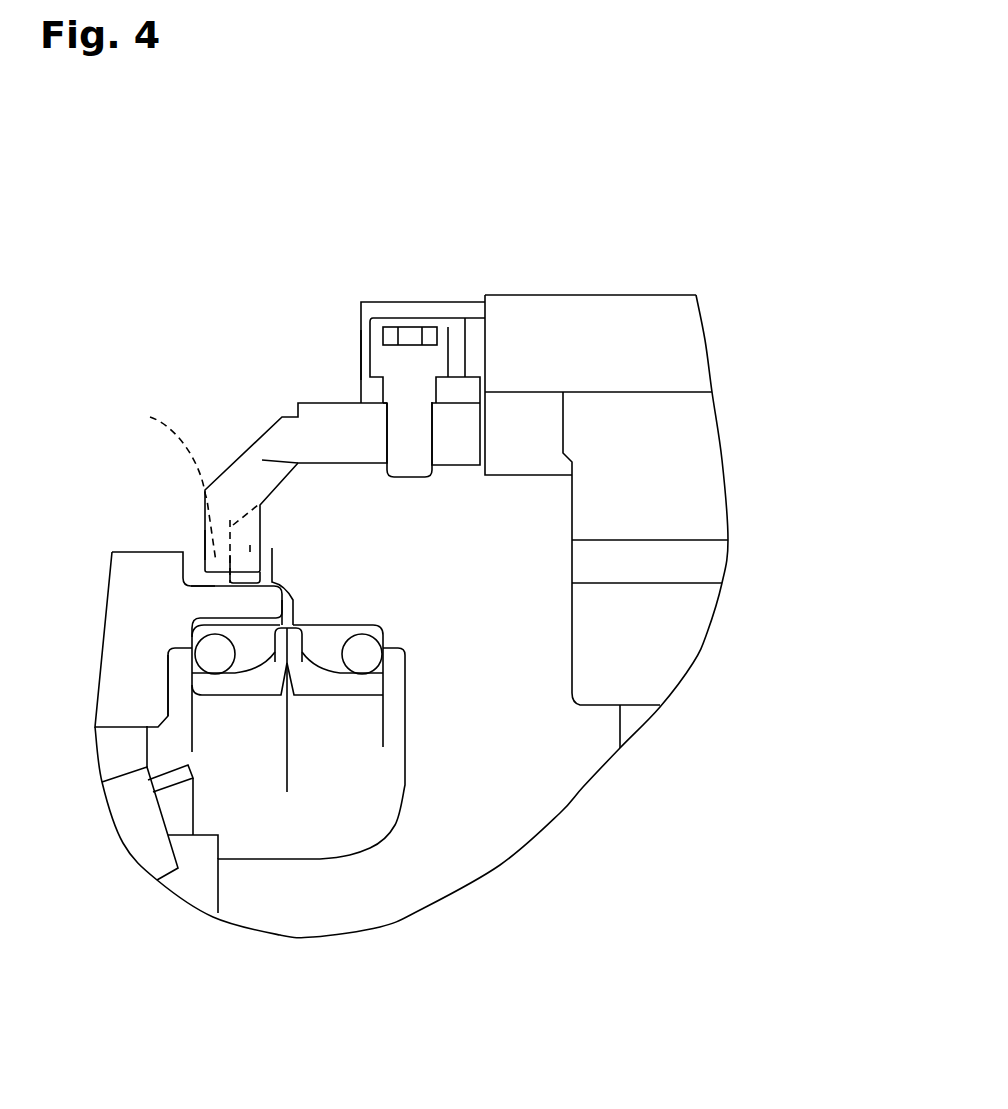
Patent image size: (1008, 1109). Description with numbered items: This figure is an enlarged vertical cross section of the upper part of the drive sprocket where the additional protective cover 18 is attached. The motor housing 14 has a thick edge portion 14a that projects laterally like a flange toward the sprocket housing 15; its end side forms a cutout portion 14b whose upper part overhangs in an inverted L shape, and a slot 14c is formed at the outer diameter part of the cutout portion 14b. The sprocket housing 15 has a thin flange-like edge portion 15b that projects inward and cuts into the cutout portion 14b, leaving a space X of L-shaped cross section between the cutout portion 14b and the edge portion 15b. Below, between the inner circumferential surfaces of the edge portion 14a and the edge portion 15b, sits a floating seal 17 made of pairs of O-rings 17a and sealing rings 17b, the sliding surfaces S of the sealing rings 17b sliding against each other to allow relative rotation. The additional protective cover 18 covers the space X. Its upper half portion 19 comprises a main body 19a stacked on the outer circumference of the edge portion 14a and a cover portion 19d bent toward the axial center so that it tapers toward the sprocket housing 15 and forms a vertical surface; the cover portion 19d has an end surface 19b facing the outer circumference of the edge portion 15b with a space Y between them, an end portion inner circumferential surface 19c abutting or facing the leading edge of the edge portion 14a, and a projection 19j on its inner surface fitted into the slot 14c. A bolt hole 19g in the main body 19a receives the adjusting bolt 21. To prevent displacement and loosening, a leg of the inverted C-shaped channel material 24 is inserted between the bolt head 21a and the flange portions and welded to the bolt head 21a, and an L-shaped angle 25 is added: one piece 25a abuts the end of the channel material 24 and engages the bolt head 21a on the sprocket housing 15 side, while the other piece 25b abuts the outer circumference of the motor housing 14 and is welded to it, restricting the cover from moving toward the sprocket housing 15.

The motor housing 14 is at (545, 752).
The edge portion 14a is at (482, 563).
The cutout portion 14b is at (300, 585).
The slot 14c is at (280, 572).
The sprocket housing 15 is at (142, 585).
The edge portion 15b is at (200, 580).
The floating seal 17 is at (313, 725).
The O-ring 17a is at (213, 653).
The sealing ring 17b is at (243, 683).
The additional protective cover 18 is at (330, 472).
The upper half portion 19 is at (360, 452).
The main body 19a is at (467, 442).
The end surface 19b is at (204, 543).
The end portion inner circumferential surface 19c is at (181, 491).
The cover portion 19d is at (262, 460).
The bolt hole 19g is at (383, 425).
The projection 19j is at (250, 545).
The adjusting bolt 21 is at (417, 423).
The bolt head 21a is at (442, 343).
The channel material 24 is at (478, 342).
The L-shaped angle 25 is at (386, 300).
The piece 25a is at (368, 350).
The piece 25b is at (423, 308).
The space X is at (290, 605).
The space Y is at (218, 578).
The sliding surface S is at (290, 647).